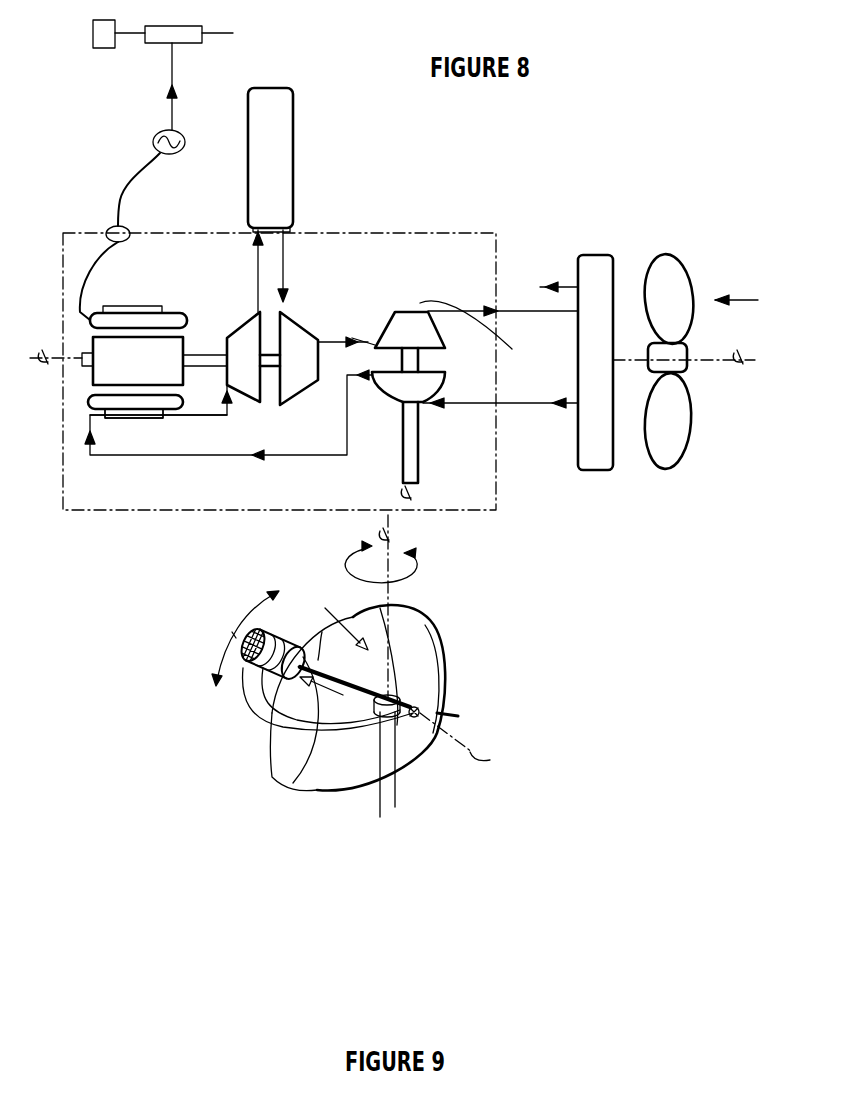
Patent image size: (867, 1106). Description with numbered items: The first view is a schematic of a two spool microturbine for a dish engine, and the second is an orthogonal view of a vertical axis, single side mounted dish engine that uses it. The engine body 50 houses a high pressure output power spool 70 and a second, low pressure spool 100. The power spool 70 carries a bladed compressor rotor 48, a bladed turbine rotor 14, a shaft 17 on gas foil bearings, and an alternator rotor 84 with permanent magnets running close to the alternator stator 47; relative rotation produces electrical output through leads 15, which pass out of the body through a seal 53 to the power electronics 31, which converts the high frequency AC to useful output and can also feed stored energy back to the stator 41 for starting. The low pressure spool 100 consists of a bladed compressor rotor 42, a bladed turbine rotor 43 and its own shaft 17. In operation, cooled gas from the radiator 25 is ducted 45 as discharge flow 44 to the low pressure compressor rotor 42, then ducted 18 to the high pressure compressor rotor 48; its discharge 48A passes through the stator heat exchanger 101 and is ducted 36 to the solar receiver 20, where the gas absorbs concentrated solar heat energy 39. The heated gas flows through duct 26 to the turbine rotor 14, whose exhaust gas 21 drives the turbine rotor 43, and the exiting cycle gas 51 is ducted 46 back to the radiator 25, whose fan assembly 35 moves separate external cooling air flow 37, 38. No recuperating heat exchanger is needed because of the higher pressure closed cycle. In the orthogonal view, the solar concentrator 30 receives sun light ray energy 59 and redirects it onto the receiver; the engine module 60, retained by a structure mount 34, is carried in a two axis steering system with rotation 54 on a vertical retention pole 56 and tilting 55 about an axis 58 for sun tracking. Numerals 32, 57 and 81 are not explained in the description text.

In FIG. 8, the turbine bladed rotor 14 is at (345, 338).
In FIG. 8, the leads 15 is at (153, 137).
In FIG. 8, the shaft 17 is at (193, 417).
In FIG. 8, the inlet supply duct 18 is at (290, 455).
In FIG. 8, the solar receiver 20 is at (308, 133).
In FIG. 9, the solar receiver 20 is at (273, 647).
In FIG. 8, the turbine exhaust gas 21 is at (353, 335).
In FIG. 8, the radiator 25 is at (612, 255).
In FIG. 9, the radiator 25 is at (213, 723).
In FIG. 8, the duct 26 is at (296, 333).
In FIG. 9, the solar concentrator 30 is at (447, 660).
In FIG. 8, the power electronics 31 is at (160, 42).
In FIG. 8, the output line 32 is at (233, 33).
In FIG. 9, the structure mount 34 is at (292, 683).
In FIG. 8, the fan assembly 35 is at (683, 345).
In FIG. 9, the fan assembly 35 is at (213, 723).
In FIG. 8, the duct 36 is at (245, 336).
In FIG. 8, the external cooling air flow 37 is at (747, 300).
In FIG. 8, the external cooling air flow 38 is at (629, 306).
In FIG. 8, the concentrated solar heat energy 39 is at (300, 85).
In FIG. 9, the concentrated solar heat energy 39 is at (318, 660).
In FIG. 8, the stator 41 is at (435, 393).
In FIG. 8, the low pressure compressor rotor 42 is at (473, 497).
In FIG. 8, the low pressure turbine rotor 43 is at (403, 325).
In FIG. 8, the closed cycle gas discharge 44 is at (539, 480).
In FIG. 8, the duct 45 is at (520, 403).
In FIG. 8, the duct 46 is at (567, 287).
In FIG. 8, the alternator stator 47 is at (165, 415).
In FIG. 8, the compressor bladed rotor 48 is at (217, 271).
In FIG. 8, the compressor discharge gas flow 48A is at (213, 362).
In FIG. 8, the engine body 50 is at (448, 233).
In FIG. 9, the engine body 50 is at (214, 691).
In FIG. 8, the exiting cycle gas 51 is at (463, 308).
In FIG. 8, the seal 53 is at (113, 230).
In FIG. 9, the rotation 54 is at (425, 578).
In FIG. 9, the tilting 55 is at (233, 635).
In FIG. 9, the retention pole 56 is at (400, 802).
In FIG. 9, the tilt axis 57 is at (470, 752).
In FIG. 9, the tilting axis 58 is at (455, 716).
In FIG. 9, the sun light ray energy 59 is at (339, 619).
In FIG. 9, the microturbine module 60 is at (262, 609).
In FIG. 8, the power spool 70 is at (280, 337).
In FIG. 8, the sensor 81 is at (93, 43).
In FIG. 8, the alternator rotor 84 is at (117, 480).
In FIG. 8, the second spool 100 is at (418, 490).
In FIG. 8, the stator heat exchanger 101 is at (137, 415).